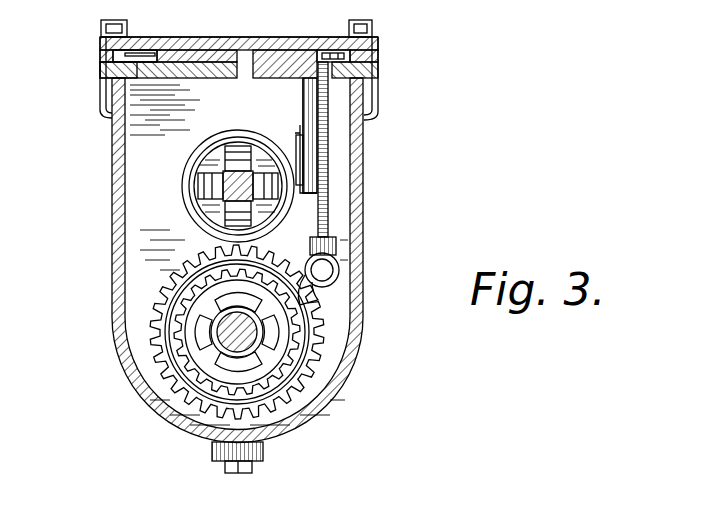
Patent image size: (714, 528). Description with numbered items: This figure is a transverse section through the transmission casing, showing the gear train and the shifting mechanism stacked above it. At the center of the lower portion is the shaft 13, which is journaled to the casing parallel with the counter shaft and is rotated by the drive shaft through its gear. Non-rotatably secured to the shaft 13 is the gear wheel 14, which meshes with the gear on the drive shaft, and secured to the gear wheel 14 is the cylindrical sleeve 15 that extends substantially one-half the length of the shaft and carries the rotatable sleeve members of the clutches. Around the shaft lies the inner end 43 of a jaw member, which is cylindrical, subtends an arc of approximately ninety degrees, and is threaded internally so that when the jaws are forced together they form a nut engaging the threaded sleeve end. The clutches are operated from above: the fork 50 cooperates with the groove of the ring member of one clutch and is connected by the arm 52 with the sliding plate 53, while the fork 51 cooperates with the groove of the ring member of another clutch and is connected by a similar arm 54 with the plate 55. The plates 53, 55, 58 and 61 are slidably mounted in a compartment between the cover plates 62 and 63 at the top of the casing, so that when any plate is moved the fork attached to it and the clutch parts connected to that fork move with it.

The shaft 13 is at (240, 323).
The gear wheel 14 is at (150, 340).
The cylindrical sleeve 15 is at (190, 365).
The inner end of jaw member 43 is at (250, 350).
The fork 50 is at (305, 133).
The fork 51 is at (312, 298).
The arm 52 is at (305, 93).
The sliding plate 53 is at (270, 60).
The arm 54 is at (330, 204).
The plate 55 is at (323, 55).
The plate 58 is at (135, 50).
The plate 61 is at (205, 60).
The cover plate 62 is at (122, 72).
The cover plate 63 is at (170, 45).